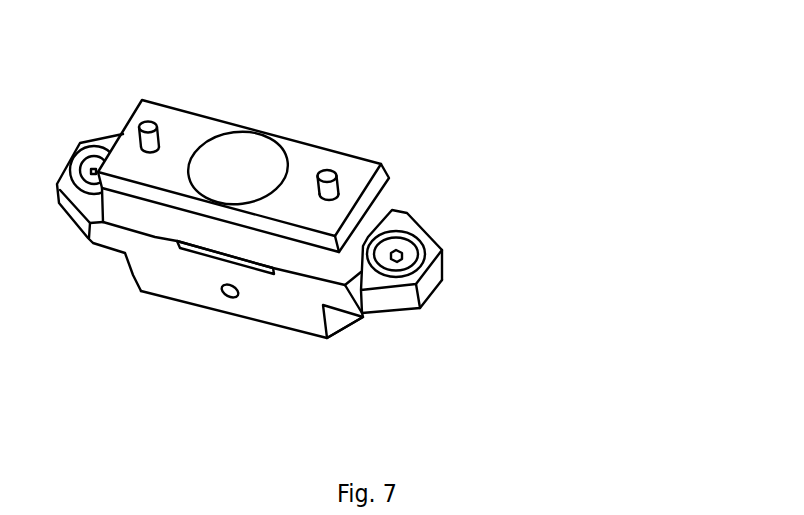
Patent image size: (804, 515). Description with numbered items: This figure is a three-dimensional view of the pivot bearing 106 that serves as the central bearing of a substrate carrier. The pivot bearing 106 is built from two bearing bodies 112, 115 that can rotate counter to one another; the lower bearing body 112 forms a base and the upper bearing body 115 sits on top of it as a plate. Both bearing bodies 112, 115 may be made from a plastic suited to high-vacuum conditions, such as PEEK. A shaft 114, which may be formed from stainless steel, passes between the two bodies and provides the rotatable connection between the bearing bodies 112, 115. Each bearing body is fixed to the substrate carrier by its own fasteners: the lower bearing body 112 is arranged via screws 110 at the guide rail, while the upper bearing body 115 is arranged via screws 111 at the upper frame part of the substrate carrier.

The pivot bearing 106 is at (412, 178).
The screws 110 is at (385, 267).
The screws 111 is at (153, 125).
The bearing body 112 is at (162, 273).
The shaft 114 is at (233, 163).
The bearing body 115 is at (301, 159).